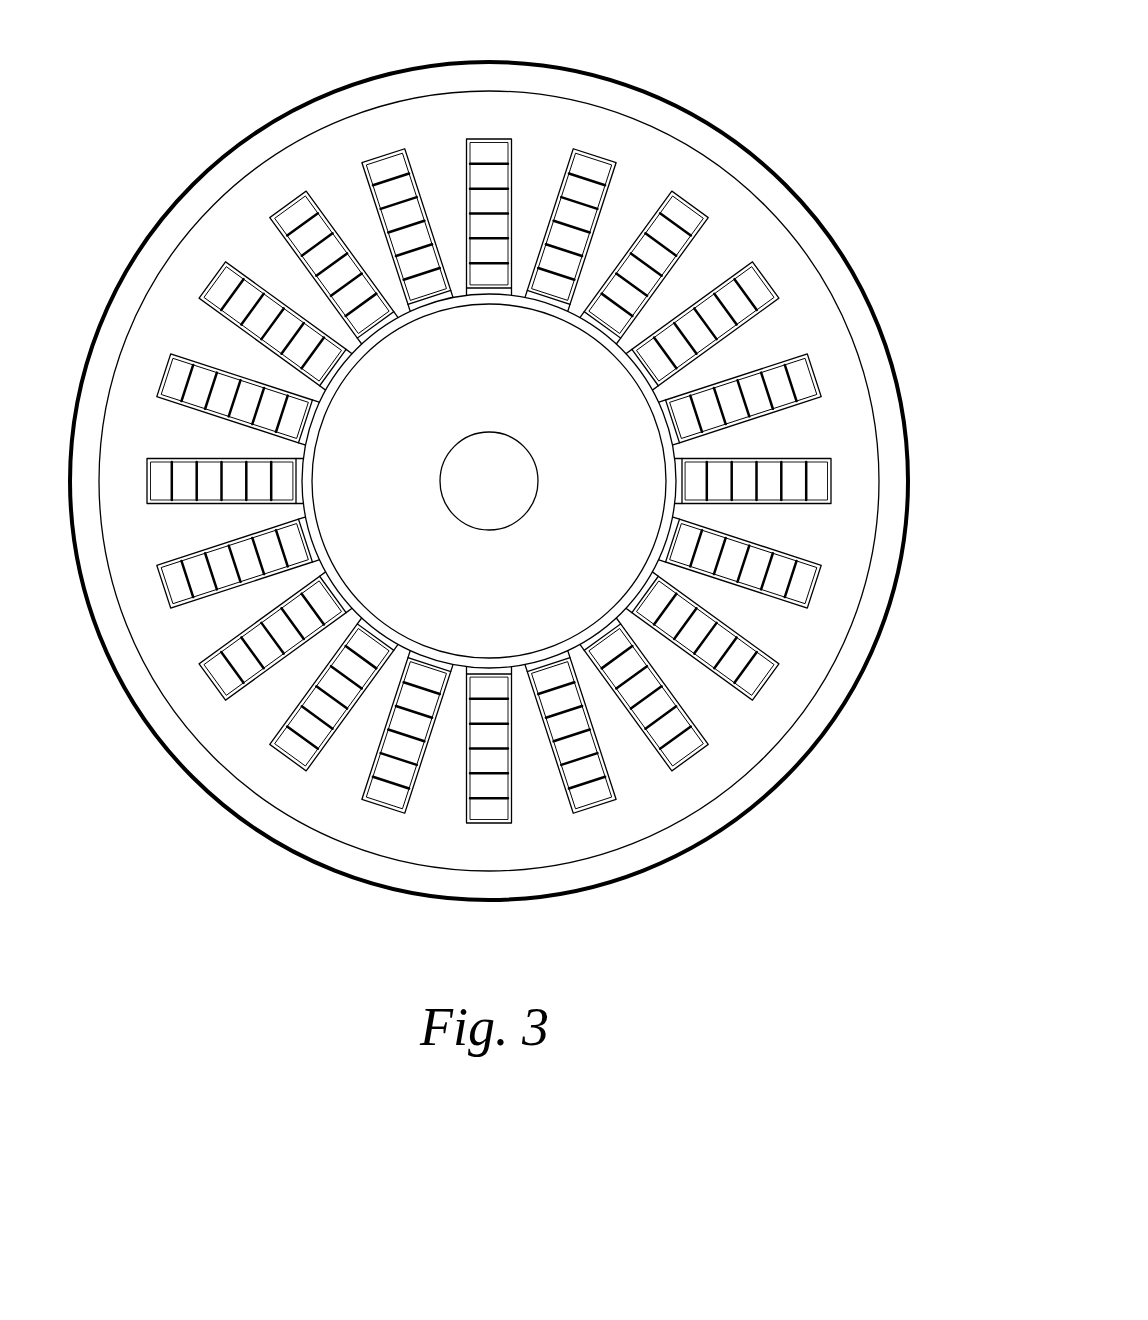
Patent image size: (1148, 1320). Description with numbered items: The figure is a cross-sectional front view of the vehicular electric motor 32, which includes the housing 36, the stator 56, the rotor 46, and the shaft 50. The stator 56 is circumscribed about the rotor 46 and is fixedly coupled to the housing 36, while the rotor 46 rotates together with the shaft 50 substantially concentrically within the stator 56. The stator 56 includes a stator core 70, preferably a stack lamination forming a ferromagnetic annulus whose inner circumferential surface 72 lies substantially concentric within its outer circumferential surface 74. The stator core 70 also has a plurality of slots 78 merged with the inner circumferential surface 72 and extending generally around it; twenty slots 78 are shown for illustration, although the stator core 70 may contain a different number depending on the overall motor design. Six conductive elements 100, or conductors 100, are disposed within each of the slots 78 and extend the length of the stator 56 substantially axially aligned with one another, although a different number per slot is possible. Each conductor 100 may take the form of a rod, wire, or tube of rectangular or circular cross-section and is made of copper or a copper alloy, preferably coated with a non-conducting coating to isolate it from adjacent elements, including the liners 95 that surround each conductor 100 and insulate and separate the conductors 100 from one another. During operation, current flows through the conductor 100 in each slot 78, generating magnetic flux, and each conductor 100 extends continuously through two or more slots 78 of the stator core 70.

The electric motor 32 is at (722, 89).
The housing 36 is at (786, 184).
The rotor 46 is at (503, 596).
The shaft 50 is at (521, 453).
The stator 56 is at (836, 545).
The stator core 70 is at (825, 326).
The inner circumferential surface 72 is at (400, 313).
The outer circumferential surface 74 is at (803, 247).
The slots 78 is at (478, 228).
The liners 95 is at (364, 161).
The conductive elements 100 is at (458, 287).